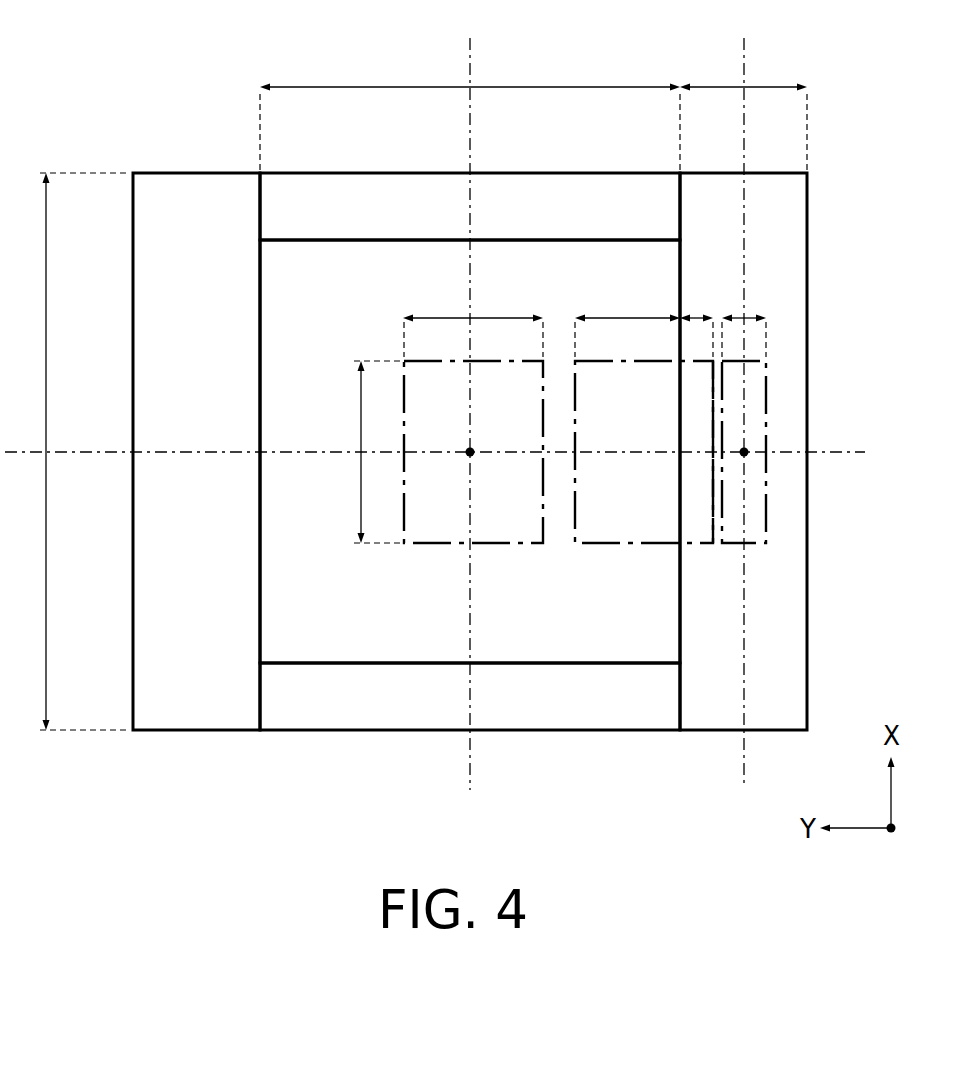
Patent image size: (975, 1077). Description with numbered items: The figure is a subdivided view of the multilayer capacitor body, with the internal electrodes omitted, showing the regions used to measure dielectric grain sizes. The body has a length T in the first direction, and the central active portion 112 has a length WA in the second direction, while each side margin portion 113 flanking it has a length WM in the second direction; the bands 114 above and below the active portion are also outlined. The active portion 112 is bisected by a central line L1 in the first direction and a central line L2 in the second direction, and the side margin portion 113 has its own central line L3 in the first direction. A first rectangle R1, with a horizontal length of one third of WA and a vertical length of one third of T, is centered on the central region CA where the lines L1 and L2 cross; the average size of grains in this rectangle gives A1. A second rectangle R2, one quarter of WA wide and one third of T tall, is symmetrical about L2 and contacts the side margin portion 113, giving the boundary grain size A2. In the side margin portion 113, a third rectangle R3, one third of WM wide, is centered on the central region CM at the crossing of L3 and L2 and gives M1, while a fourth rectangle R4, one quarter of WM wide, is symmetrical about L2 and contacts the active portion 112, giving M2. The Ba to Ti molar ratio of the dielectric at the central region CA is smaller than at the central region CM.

The active portion 112 is at (275, 591).
The side margin portion 113 is at (164, 274).
The upper and lower non-display areas 114 is at (563, 198).
The first rectangle R1 is at (425, 546).
The second rectangle R2 is at (615, 546).
The third rectangle R3 is at (750, 546).
The fourth rectangle R4 is at (702, 546).
The central region of the active portion CA is at (489, 469).
The central region of the side margin portion CM is at (746, 456).
The central line in the active portion in the first direction L1 is at (468, 397).
The central line in the active portion in the second direction L2 is at (455, 452).
The central line in the first direction in the side margin portion L3 is at (744, 396).
The length of the body in the first direction T is at (46, 420).
The length of the active portion in the second direction WA is at (536, 68).
The length of the side margin portion in the second direction WM is at (769, 87).